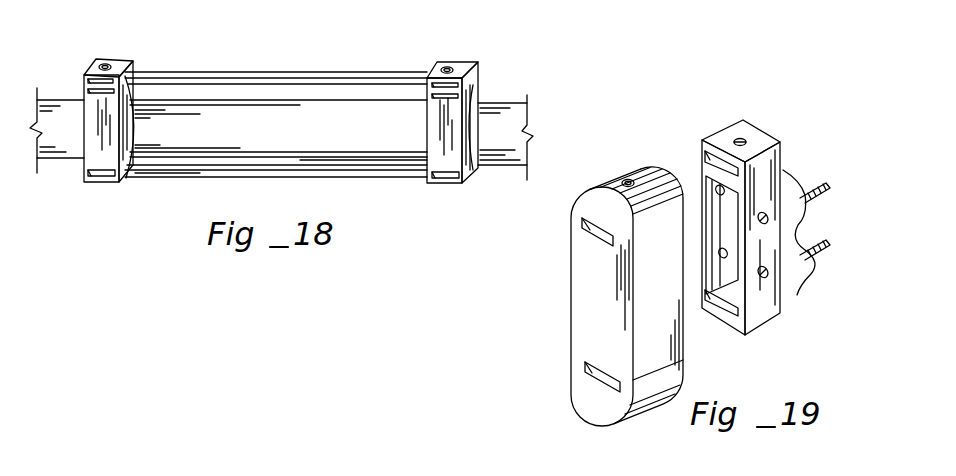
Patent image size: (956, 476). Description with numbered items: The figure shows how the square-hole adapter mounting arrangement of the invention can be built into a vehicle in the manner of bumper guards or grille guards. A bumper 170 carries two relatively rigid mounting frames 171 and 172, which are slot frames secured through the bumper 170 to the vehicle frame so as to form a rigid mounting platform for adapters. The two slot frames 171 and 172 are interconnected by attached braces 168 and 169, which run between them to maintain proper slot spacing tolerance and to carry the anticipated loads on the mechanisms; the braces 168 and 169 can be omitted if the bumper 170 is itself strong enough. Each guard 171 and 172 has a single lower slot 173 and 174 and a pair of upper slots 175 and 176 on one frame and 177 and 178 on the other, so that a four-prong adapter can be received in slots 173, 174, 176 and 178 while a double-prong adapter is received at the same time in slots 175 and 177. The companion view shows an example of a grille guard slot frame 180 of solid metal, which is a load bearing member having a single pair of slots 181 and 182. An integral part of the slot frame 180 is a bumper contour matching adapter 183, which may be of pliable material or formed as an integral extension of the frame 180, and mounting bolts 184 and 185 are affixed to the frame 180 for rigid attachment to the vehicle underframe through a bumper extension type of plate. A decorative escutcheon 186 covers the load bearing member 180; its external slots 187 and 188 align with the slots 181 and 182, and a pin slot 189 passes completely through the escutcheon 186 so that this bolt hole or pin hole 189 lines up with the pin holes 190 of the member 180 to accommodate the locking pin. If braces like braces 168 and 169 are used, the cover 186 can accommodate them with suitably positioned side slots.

In FIG. 18, the brace 168 is at (257, 72).
In FIG. 18, the brace 169 is at (230, 170).
In FIG. 18, the bumper 170 is at (517, 118).
In FIG. 18, the mounting frame 171 is at (126, 62).
In FIG. 18, the mounting frame 172 is at (432, 66).
In FIG. 18, the lower slot 173 is at (107, 176).
In FIG. 18, the lower slot 174 is at (437, 174).
In FIG. 18, the upper slot 175 is at (90, 68).
In FIG. 18, the upper slot 176 is at (87, 90).
In FIG. 18, the upper slot 177 is at (468, 63).
In FIG. 18, the upper slot 178 is at (454, 95).
In FIG. 19, the grille guard slot frame 180 is at (767, 313).
In FIG. 19, the slot 181 is at (710, 158).
In FIG. 19, the slot 182 is at (733, 315).
In FIG. 19, the bumper contour matching adapter 183 is at (803, 277).
In FIG. 19, the mounting bolt 184 is at (863, 155).
In FIG. 19, the mounting bolt 185 is at (833, 248).
In FIG. 19, the decorative escutcheon 186 is at (576, 278).
In FIG. 19, the external slot 187 is at (590, 235).
In FIG. 19, the external slot 188 is at (596, 380).
In FIG. 19, the pin slot 189 is at (628, 180).
In FIG. 19, the pin hole 190 is at (740, 139).